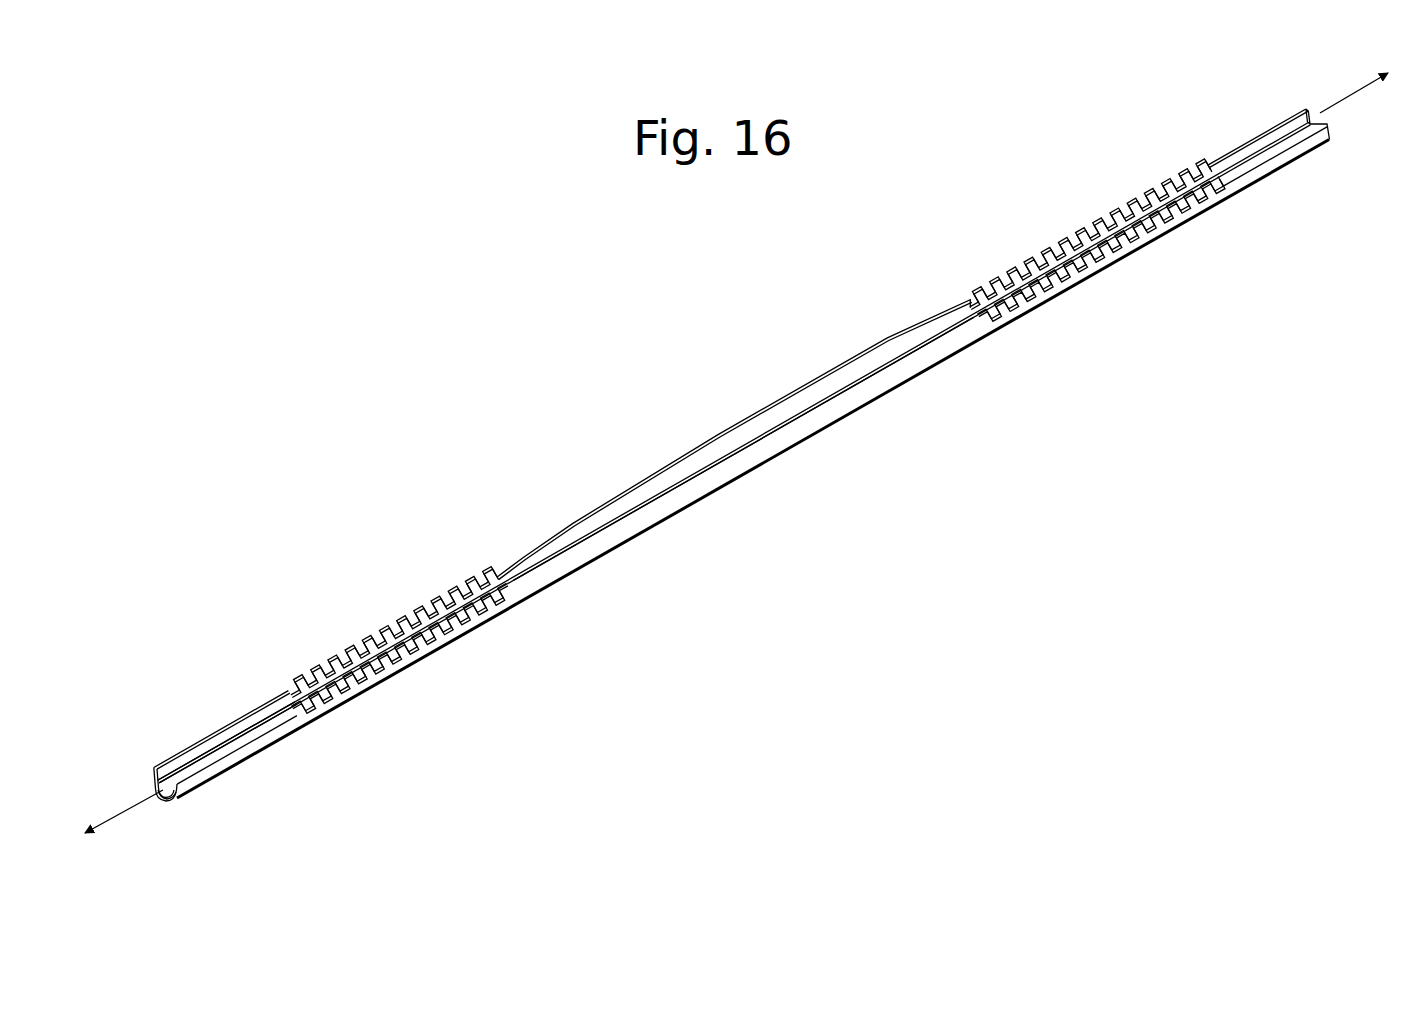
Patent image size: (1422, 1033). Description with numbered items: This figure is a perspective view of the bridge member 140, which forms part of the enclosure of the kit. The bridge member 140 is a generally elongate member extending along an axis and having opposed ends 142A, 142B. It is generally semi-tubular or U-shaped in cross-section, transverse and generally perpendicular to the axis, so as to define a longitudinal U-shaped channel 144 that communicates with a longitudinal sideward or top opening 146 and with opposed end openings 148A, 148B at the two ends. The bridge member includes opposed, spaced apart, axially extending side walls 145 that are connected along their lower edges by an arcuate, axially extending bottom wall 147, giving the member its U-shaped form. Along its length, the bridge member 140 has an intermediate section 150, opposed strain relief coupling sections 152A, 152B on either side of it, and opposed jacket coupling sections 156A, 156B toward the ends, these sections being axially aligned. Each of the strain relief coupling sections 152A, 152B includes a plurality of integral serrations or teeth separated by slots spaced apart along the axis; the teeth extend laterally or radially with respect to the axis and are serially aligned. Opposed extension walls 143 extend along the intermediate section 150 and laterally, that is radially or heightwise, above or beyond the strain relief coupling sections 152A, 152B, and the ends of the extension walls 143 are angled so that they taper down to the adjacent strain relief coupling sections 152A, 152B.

The bridge member 140 is at (625, 383).
The end 142A is at (1167, 92).
The end 142B is at (146, 765).
The extension walls 143 is at (867, 377).
The U-shaped channel 144 is at (766, 432).
The side walls 145 is at (248, 718).
The top opening 146 is at (574, 489).
The bottom wall 147 is at (155, 803).
The end opening 148A is at (1322, 104).
The end opening 148B is at (150, 773).
The intermediate section 150 is at (705, 483).
The strain relief coupling section 152A is at (1183, 217).
The strain relief coupling section 152B is at (405, 667).
The jacket coupling section 156A is at (1300, 146).
The jacket coupling section 156B is at (198, 776).